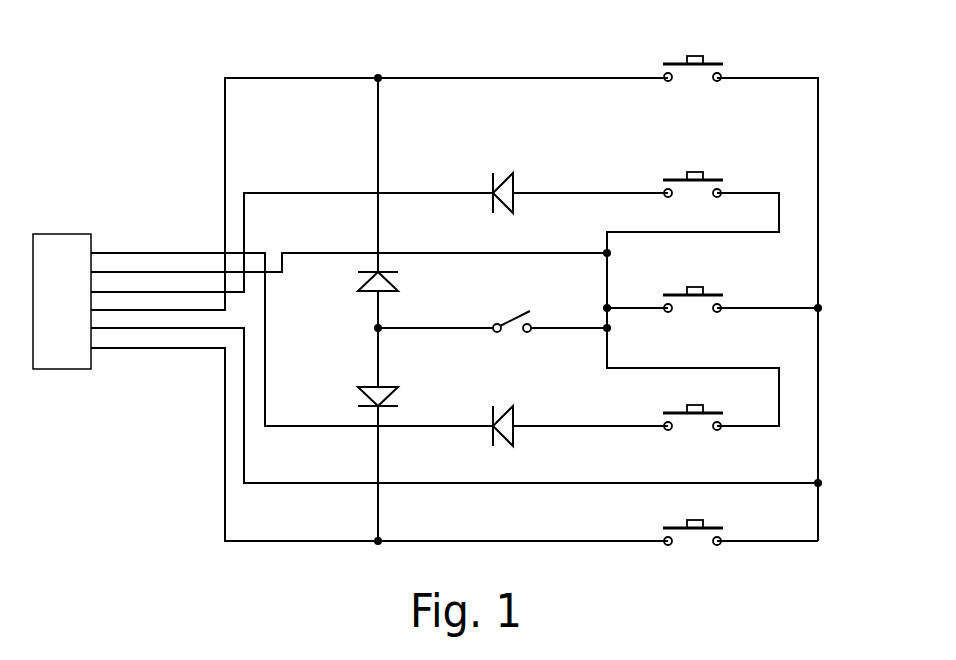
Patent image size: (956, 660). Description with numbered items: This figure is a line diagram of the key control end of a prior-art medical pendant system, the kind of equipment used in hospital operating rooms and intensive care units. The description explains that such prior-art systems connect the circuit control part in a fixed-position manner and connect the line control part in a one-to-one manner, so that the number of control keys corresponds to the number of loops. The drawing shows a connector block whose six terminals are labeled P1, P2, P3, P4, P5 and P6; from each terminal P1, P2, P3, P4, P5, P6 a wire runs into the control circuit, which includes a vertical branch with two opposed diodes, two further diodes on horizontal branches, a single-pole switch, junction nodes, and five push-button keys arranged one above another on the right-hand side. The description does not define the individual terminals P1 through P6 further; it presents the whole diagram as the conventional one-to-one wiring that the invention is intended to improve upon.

The connector pin P1 is at (363, 336).
The connector pin P2 is at (332, 266).
The connector pin P3 is at (418, 246).
The connector pin P4 is at (438, 309).
The connector pin P5 is at (438, 402).
The connector pin P6 is at (438, 441).